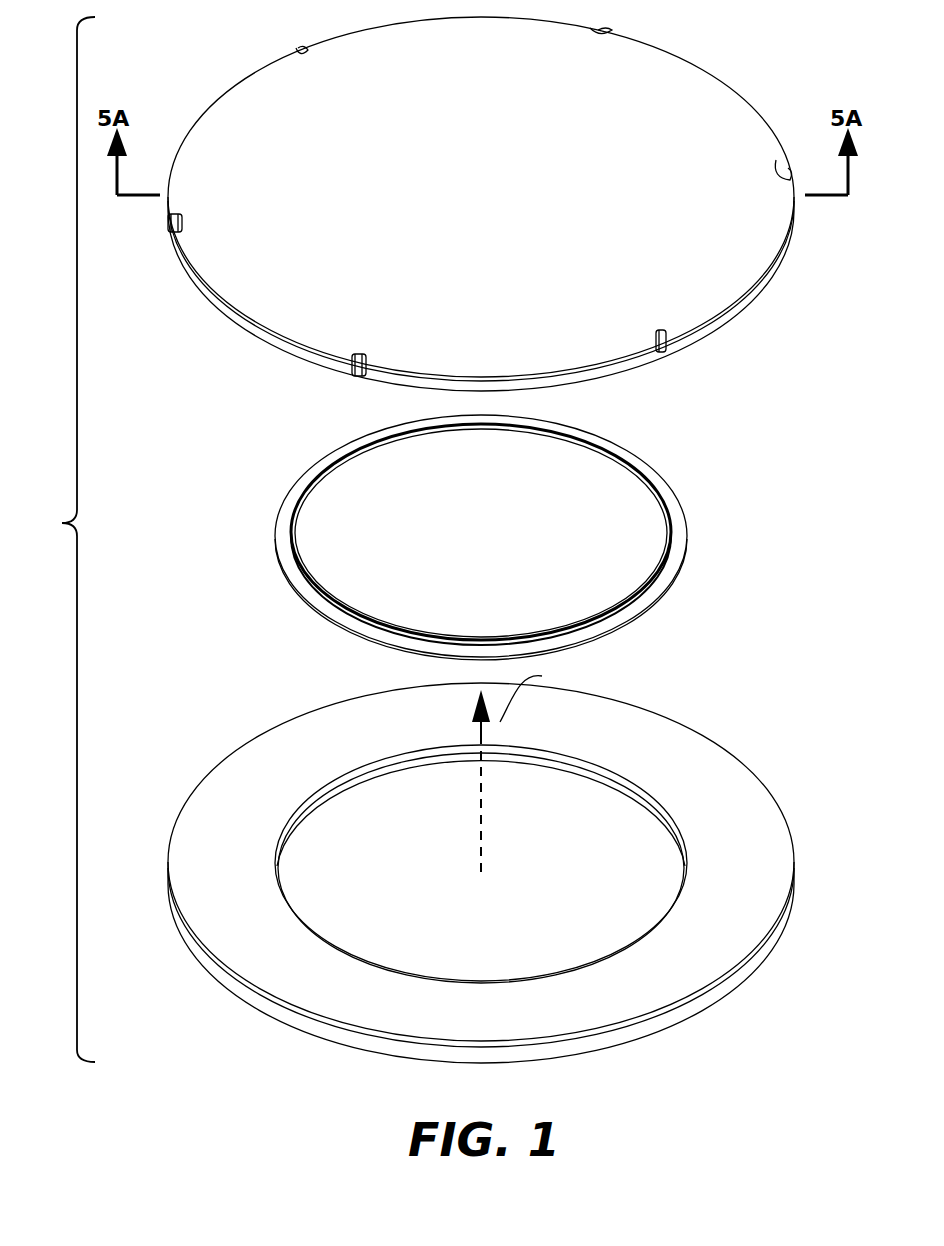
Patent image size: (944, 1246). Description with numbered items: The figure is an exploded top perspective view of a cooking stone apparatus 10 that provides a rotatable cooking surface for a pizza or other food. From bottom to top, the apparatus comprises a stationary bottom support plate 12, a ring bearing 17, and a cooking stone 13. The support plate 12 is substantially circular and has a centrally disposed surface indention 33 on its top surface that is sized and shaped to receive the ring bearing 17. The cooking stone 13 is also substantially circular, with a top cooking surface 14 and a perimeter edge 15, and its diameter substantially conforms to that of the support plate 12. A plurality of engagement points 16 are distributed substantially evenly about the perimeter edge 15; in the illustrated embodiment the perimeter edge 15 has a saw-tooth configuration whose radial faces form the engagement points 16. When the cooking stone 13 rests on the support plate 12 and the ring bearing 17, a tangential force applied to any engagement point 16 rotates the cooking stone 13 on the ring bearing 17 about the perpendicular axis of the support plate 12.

The cooking stone apparatus 10 is at (62, 539).
The stationary bottom support plate 12 is at (490, 864).
The cooking stone 13 is at (496, 203).
The top cooking surface 14 is at (289, 106).
The perimeter edge 15 is at (762, 284).
The engagement points 16 is at (601, 32).
The ring bearing 17 is at (742, 489).
The surface indention 33 is at (361, 800).